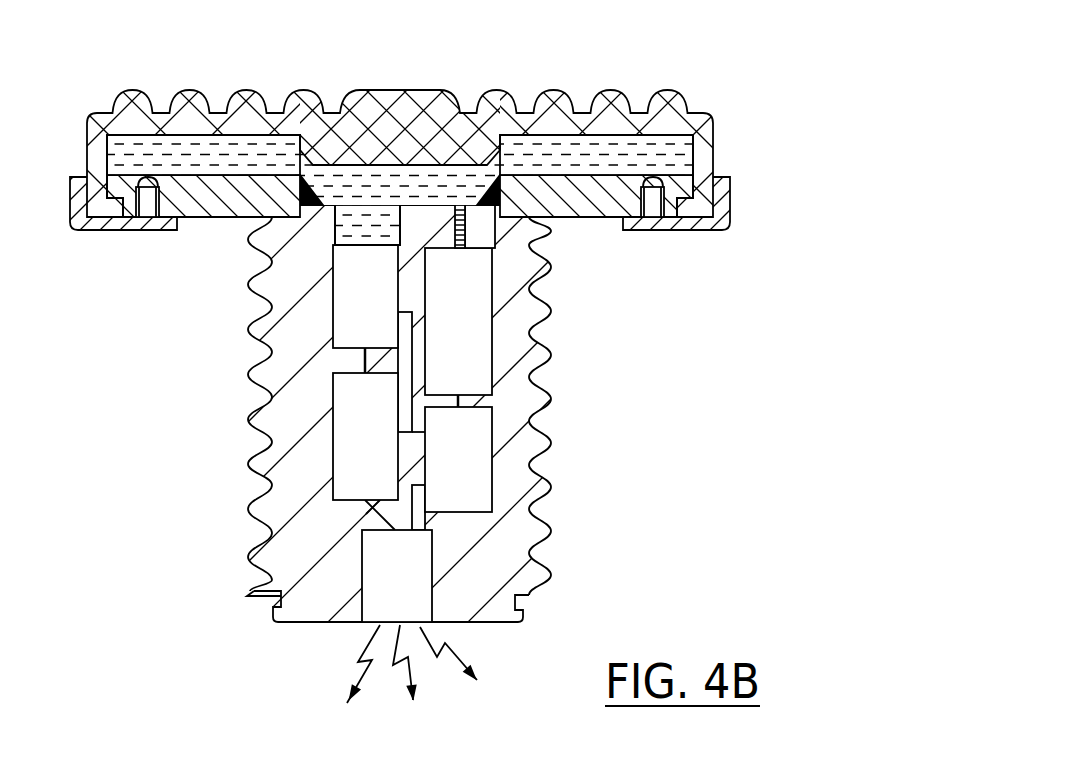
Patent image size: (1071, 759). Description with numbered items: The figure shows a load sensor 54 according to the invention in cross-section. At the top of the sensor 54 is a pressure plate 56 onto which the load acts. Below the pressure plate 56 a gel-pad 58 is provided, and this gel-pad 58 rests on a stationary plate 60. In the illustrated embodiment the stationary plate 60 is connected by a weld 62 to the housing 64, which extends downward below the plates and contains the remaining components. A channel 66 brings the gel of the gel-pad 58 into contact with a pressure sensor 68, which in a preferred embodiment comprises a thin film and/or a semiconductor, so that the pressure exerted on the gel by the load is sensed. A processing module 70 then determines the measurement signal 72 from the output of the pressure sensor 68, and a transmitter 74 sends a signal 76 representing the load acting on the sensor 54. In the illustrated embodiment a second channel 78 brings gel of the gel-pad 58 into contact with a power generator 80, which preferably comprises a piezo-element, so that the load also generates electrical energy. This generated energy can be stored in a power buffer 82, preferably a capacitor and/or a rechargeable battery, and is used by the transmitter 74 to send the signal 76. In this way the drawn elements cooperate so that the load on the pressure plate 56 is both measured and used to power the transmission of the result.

The sensor 54 is at (612, 50).
The pressure plate 56 is at (675, 111).
The gel-pad 58 is at (675, 158).
The stationary plate 60 is at (603, 208).
The weld 62 is at (493, 210).
The housing 64 is at (520, 467).
The channel 66 is at (347, 241).
The pressure sensor 68 is at (345, 336).
The processing module 70 is at (343, 456).
The measurement signal 72 is at (395, 525).
The transmitter 74 is at (380, 587).
The signal 76 is at (360, 662).
The channel 78 is at (492, 208).
The power generator 80 is at (468, 383).
The power buffer 82 is at (488, 503).